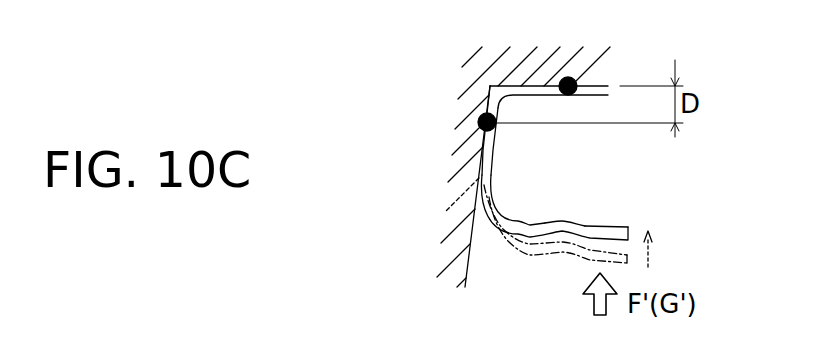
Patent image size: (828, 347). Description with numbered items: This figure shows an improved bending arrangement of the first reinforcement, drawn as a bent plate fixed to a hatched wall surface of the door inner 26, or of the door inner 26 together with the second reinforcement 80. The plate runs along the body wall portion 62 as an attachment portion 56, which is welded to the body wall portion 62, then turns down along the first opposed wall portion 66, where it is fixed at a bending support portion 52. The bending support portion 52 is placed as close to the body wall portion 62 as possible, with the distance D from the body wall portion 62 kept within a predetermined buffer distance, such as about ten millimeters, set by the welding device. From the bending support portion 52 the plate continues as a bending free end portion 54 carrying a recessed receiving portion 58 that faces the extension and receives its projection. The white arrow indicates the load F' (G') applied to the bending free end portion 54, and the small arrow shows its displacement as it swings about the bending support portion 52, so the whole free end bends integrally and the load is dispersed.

The door inner 26 is at (398, 240).
The second reinforcement 80 is at (452, 254).
The body wall portion 62 is at (534, 56).
The first opposed wall portion 66 is at (437, 186).
The attachment portion 56 is at (552, 96).
The bending support portion 52 is at (497, 125).
The bending free end portion 54 is at (622, 227).
The receiving portion 58 is at (569, 219).